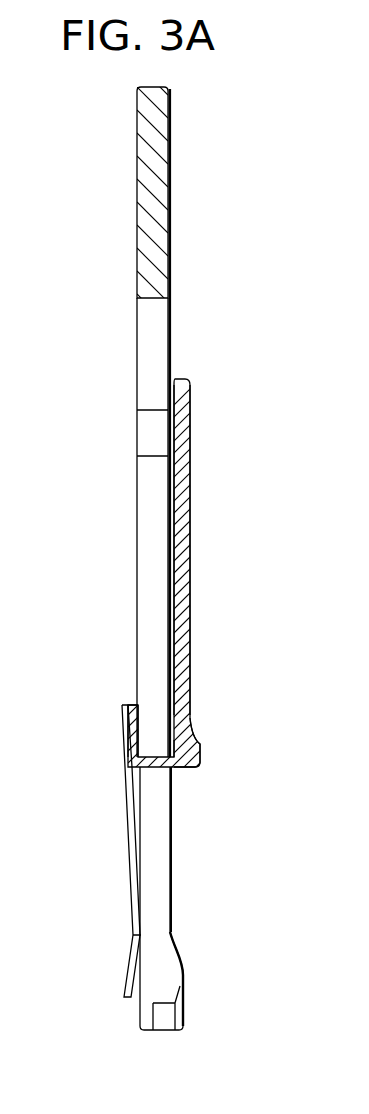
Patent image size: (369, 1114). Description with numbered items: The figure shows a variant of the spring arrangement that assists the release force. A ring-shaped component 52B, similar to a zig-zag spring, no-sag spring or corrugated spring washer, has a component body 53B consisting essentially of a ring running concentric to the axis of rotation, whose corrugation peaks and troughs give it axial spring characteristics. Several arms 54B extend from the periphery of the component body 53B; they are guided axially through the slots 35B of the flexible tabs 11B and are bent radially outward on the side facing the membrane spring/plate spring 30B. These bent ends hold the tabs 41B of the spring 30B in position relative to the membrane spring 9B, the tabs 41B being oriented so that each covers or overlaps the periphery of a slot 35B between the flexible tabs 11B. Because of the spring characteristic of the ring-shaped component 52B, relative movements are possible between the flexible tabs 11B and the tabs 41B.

The membrane spring 9B is at (153, 195).
The membrane spring/plate spring 30B is at (175, 593).
The tabs of the spring 41B is at (190, 583).
The component body 53B is at (129, 734).
The ring-shaped component 52B is at (121, 779).
The arms 54B is at (190, 772).
The slots 35B is at (175, 874).
The flexible tabs 11B is at (170, 970).